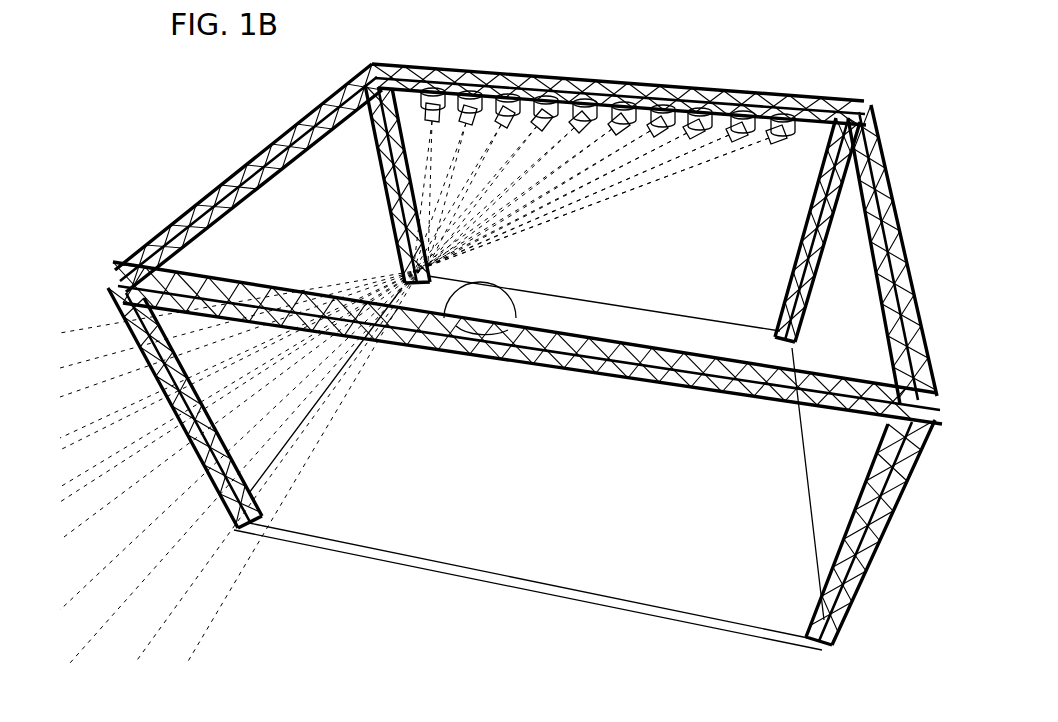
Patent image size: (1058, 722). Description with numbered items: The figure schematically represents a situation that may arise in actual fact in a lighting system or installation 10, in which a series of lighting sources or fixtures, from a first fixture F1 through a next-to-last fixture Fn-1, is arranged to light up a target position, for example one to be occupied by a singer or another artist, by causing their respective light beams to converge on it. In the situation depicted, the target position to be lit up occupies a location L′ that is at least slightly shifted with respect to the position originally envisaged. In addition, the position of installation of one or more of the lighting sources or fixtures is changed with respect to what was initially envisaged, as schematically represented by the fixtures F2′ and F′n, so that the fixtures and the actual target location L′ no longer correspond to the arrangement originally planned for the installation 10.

The lighting system or installation 10 is at (862, 82).
The lighting source or fixture F1 is at (435, 108).
The lighting source or fixture in changed installation position F2′ is at (490, 105).
The lighting source or fixture Fn-1 is at (746, 144).
The lighting source or fixture in changed installation position F′n is at (784, 146).
The shifted target location L′ is at (489, 292).